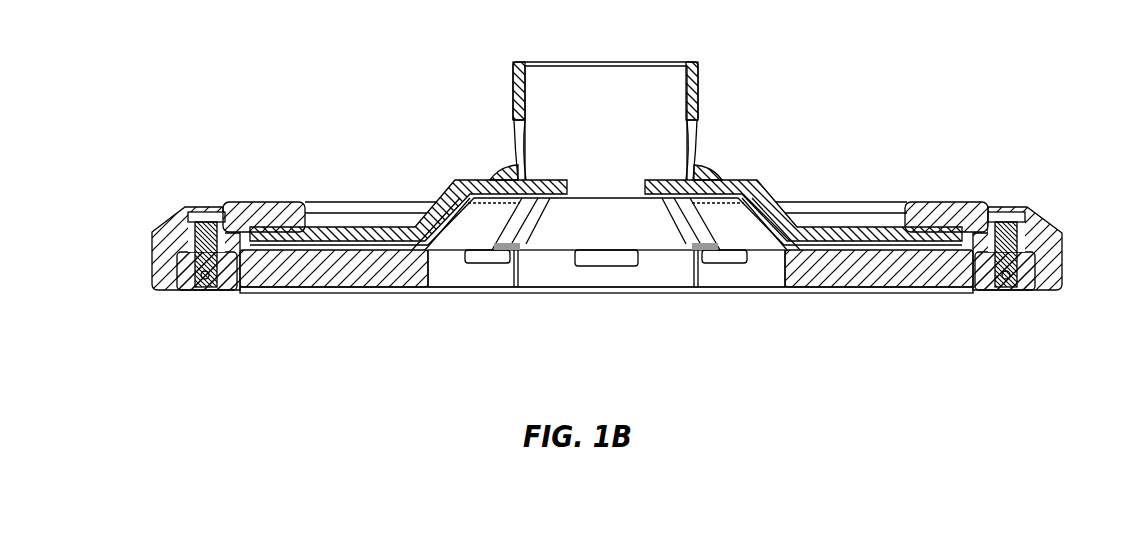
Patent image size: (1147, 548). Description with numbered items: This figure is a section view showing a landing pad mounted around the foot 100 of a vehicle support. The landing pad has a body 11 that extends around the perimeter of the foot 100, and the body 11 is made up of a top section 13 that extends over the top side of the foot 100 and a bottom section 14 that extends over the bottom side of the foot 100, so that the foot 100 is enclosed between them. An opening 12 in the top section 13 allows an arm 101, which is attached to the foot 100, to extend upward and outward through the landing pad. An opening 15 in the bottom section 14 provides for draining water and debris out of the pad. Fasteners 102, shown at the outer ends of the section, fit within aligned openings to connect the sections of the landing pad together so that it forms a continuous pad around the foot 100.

The body 11 is at (155, 257).
The opening 12 is at (848, 190).
The top section 13 is at (270, 212).
The bottom section 14 is at (345, 270).
The opening 15 is at (585, 283).
The foot 100 is at (373, 230).
The arm 101 is at (695, 85).
The fastener 102 is at (173, 263).